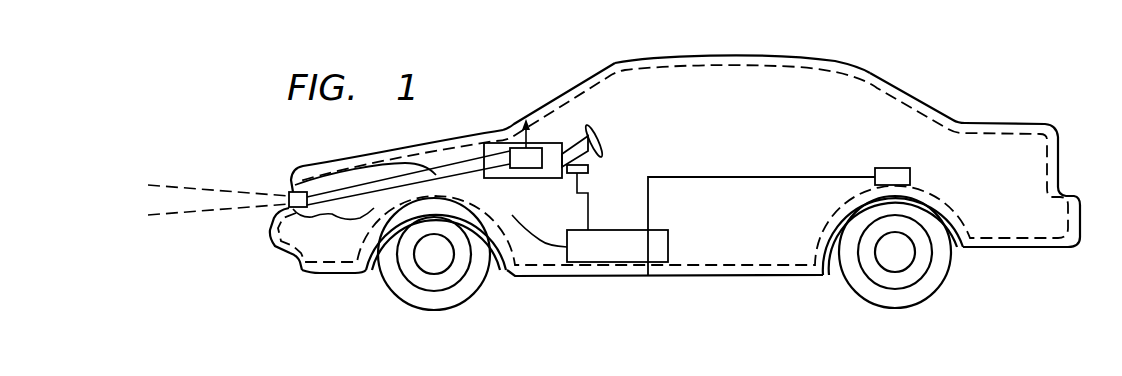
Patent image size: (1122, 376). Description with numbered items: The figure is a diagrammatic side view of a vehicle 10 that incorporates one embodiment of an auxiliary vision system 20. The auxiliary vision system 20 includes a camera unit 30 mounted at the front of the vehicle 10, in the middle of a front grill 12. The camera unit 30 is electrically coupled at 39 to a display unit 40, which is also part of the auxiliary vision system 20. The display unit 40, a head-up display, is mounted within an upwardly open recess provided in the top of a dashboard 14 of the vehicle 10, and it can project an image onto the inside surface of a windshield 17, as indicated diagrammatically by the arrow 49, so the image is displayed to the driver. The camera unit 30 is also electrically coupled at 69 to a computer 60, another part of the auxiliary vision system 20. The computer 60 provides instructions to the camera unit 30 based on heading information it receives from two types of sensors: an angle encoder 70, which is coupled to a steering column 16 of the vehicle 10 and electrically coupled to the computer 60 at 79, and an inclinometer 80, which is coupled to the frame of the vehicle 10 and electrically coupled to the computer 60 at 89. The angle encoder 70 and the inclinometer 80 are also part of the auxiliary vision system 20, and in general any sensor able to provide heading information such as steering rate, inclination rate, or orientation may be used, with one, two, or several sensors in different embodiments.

The vehicle 10 is at (989, 86).
The front grill 12 is at (290, 191).
The dashboard 14 is at (557, 178).
The steering column 16 is at (590, 124).
The windshield 17 is at (560, 96).
The auxiliary vision system 20 is at (722, 67).
The camera unit 30 is at (322, 239).
The electrical coupling between camera unit and display unit 39 is at (457, 165).
The display unit 40 is at (533, 178).
The arrow 49 is at (528, 136).
The computer 60 is at (668, 246).
The electrical coupling between camera unit and computer 69 is at (545, 244).
The angle encoder 70 is at (588, 169).
The electrical coupling between angle encoder and computer 79 is at (592, 212).
The inclinometer 80 is at (893, 168).
The electrical coupling between inclinometer and computer 89 is at (748, 177).